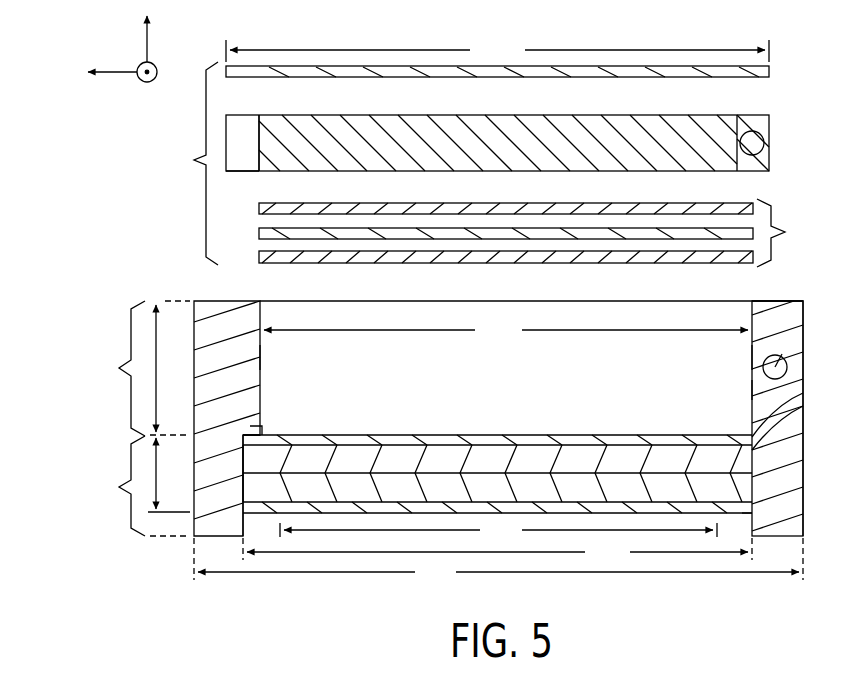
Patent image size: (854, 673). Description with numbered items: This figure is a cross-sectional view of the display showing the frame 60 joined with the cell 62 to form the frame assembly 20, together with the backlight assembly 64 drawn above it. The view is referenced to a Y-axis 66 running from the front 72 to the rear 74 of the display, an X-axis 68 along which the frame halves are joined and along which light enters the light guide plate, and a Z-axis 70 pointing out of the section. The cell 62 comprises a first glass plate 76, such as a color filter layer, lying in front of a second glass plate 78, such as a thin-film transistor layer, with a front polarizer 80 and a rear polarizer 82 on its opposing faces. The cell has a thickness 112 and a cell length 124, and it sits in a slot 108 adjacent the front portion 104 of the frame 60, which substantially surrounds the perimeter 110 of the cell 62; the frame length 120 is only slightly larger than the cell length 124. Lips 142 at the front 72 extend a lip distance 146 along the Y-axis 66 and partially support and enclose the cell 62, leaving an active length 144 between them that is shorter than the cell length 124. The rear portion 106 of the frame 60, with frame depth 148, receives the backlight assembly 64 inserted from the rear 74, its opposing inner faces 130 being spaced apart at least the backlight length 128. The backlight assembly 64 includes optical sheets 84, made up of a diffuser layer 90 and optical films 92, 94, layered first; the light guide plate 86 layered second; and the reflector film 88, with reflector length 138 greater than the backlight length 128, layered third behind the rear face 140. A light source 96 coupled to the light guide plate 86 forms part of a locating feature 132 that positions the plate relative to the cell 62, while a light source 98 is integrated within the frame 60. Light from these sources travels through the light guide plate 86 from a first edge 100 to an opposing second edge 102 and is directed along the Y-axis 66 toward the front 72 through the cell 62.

The frame assembly 20 is at (752, 392).
The frame 60 is at (797, 314).
The cell 62 is at (234, 437).
The backlight assembly 64 is at (190, 163).
The Y-axis 66 is at (147, 42).
The X-axis 68 is at (118, 73).
The Z-axis 70 is at (147, 82).
The front 72 is at (597, 593).
The rear 74 is at (627, 30).
The first glass plate 76 is at (752, 473).
The second glass plate 78 is at (752, 440).
The front polarizer 80 is at (752, 508).
The rear polarizer 82 is at (796, 402).
The optical sheets 84 is at (787, 233).
The light guide plate 86 is at (332, 115).
The reflector film 88 is at (770, 72).
The diffuser layer 90 is at (338, 203).
The optical film 92 is at (259, 232).
The optical film 94 is at (340, 263).
The light source 96 is at (766, 131).
The light source 98 is at (783, 353).
The first edge 100 is at (745, 115).
The second edge 102 is at (259, 141).
The front portion 104 is at (111, 486).
The rear portion 106 is at (111, 368).
The slot 108 is at (256, 516).
The perimeter 110 is at (257, 432).
The thickness 112 is at (165, 485).
The frame length 120 is at (498, 561).
The cell length 124 is at (497, 551).
The backlight length 128 is at (506, 330).
The inner faces 130 is at (268, 357).
The locating feature 132 is at (255, 115).
The reflector length 138 is at (497, 50).
The rear face 140 is at (768, 301).
The lips 142 is at (746, 516).
The active length 144 is at (498, 530).
The lip distance 146 is at (158, 527).
The frame depth 148 is at (165, 366).